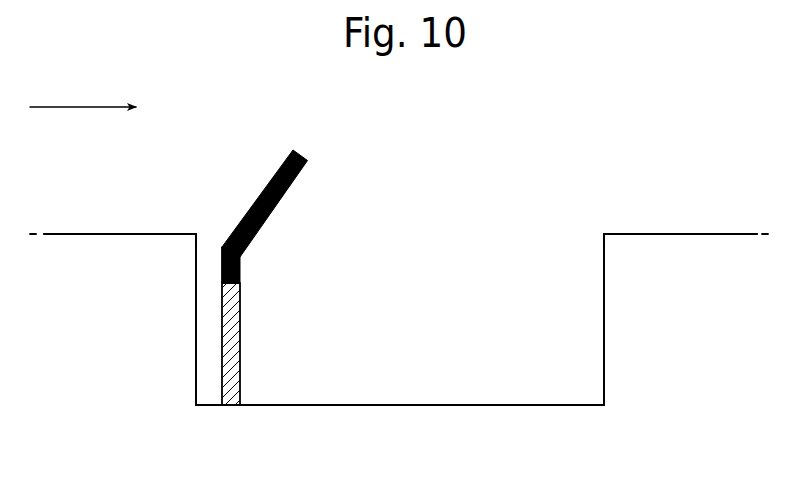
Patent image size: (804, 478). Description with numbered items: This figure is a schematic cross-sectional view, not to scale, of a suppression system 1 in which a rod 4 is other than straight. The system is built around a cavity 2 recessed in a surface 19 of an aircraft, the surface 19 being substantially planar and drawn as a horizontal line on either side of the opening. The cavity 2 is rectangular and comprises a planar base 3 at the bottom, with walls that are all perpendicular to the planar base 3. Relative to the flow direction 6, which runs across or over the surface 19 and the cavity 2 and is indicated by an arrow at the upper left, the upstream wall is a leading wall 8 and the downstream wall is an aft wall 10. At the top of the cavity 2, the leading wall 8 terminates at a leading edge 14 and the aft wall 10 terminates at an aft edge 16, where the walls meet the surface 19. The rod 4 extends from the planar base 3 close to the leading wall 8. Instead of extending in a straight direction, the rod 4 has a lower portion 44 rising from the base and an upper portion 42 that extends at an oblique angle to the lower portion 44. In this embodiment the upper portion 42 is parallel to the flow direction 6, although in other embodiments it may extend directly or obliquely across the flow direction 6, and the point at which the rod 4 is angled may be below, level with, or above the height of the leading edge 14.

The suppression system 1 is at (636, 98).
The cavity 2 is at (290, 375).
The planar base 3 is at (413, 406).
The rod 4 is at (270, 276).
The flow direction 6 is at (66, 106).
The leading wall 8 is at (196, 340).
The aft wall 10 is at (605, 328).
The leading edge 14 is at (196, 233).
The aft edge 16 is at (604, 233).
The surface 19 is at (80, 233).
The upper portion 42 is at (276, 205).
The lower portion 44 is at (240, 300).